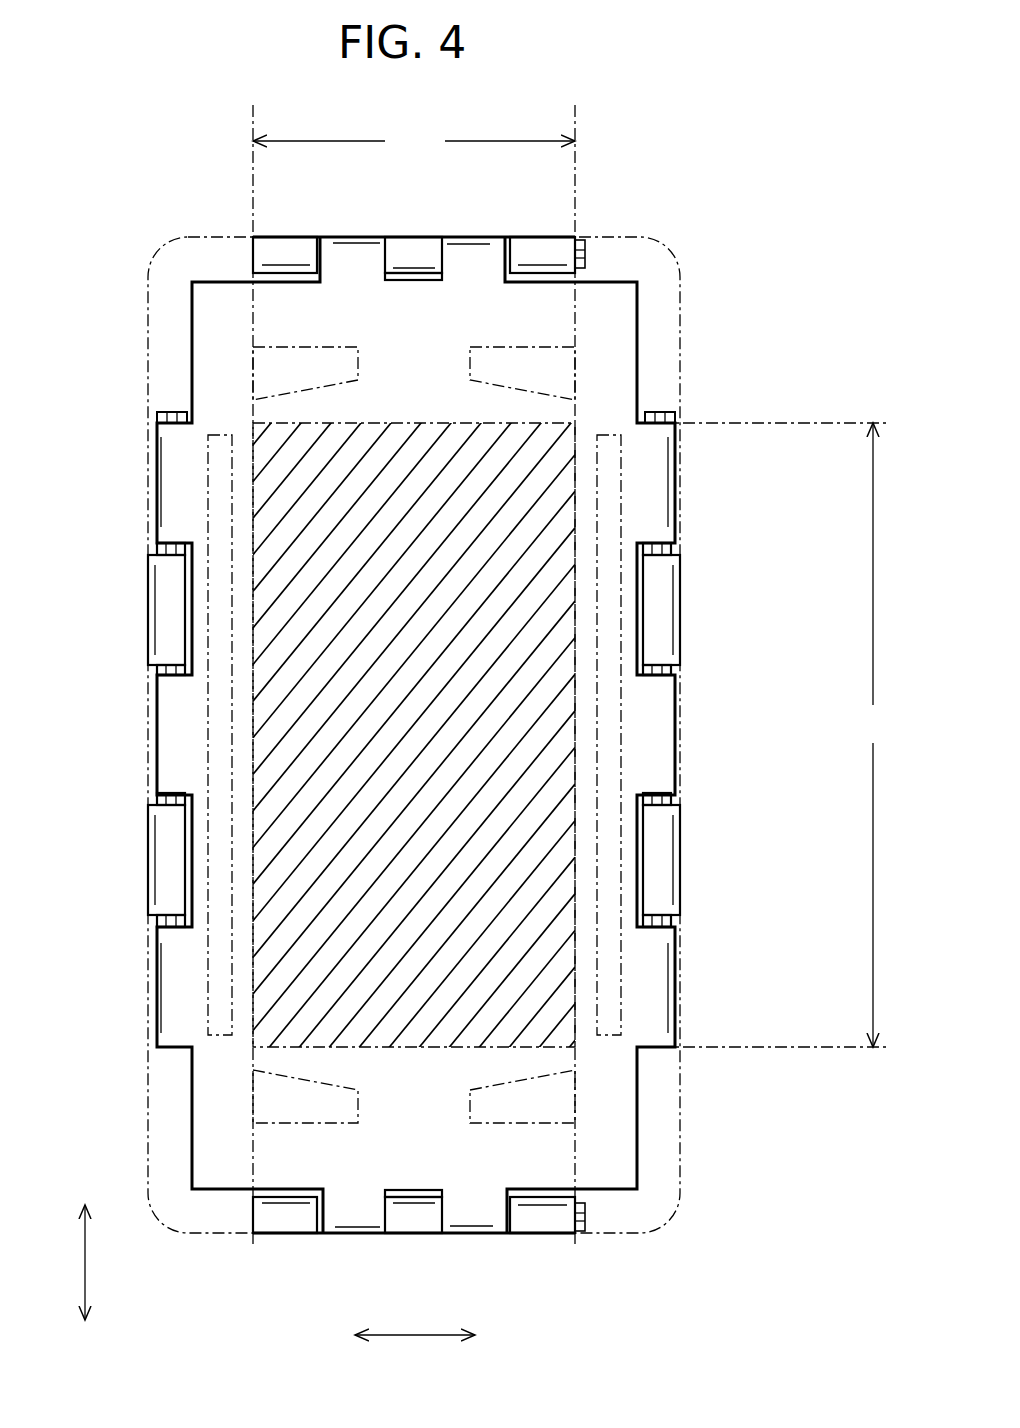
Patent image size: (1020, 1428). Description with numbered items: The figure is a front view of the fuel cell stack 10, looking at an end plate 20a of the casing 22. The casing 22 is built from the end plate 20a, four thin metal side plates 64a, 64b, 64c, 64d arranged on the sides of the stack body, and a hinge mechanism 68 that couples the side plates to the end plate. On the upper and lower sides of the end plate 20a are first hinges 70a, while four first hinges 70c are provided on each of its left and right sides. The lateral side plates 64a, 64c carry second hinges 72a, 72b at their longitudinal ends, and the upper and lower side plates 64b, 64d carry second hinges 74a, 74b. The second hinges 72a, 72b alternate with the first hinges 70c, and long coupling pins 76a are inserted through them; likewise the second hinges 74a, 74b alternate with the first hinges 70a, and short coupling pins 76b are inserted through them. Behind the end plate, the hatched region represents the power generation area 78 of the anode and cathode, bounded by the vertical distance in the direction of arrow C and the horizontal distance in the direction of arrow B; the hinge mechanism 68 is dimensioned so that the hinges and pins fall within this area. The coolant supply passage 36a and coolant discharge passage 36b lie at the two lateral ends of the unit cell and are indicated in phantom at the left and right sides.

The fuel cell stack 10 is at (676, 78).
The casing 22 is at (704, 302).
The hinge mechanism 68 is at (530, 216).
The second hinge 74a is at (288, 265).
The second hinge 74b is at (288, 1215).
The side plate 64b is at (405, 236).
The side plate 64d is at (540, 1240).
The side plate 64c is at (147, 888).
The side plate 64a is at (681, 888).
The first hinge 70a is at (467, 252).
The first hinge 70c is at (163, 455).
The long coupling pin 76a is at (157, 418).
The short coupling pin 76b is at (586, 252).
The second hinge 72a is at (663, 630).
The second hinge 72b is at (165, 630).
The coolant supply passage 36a is at (222, 854).
The coolant discharge passage 36b is at (608, 568).
The power generation area 78 is at (302, 764).
The end plate 20a is at (605, 1122).